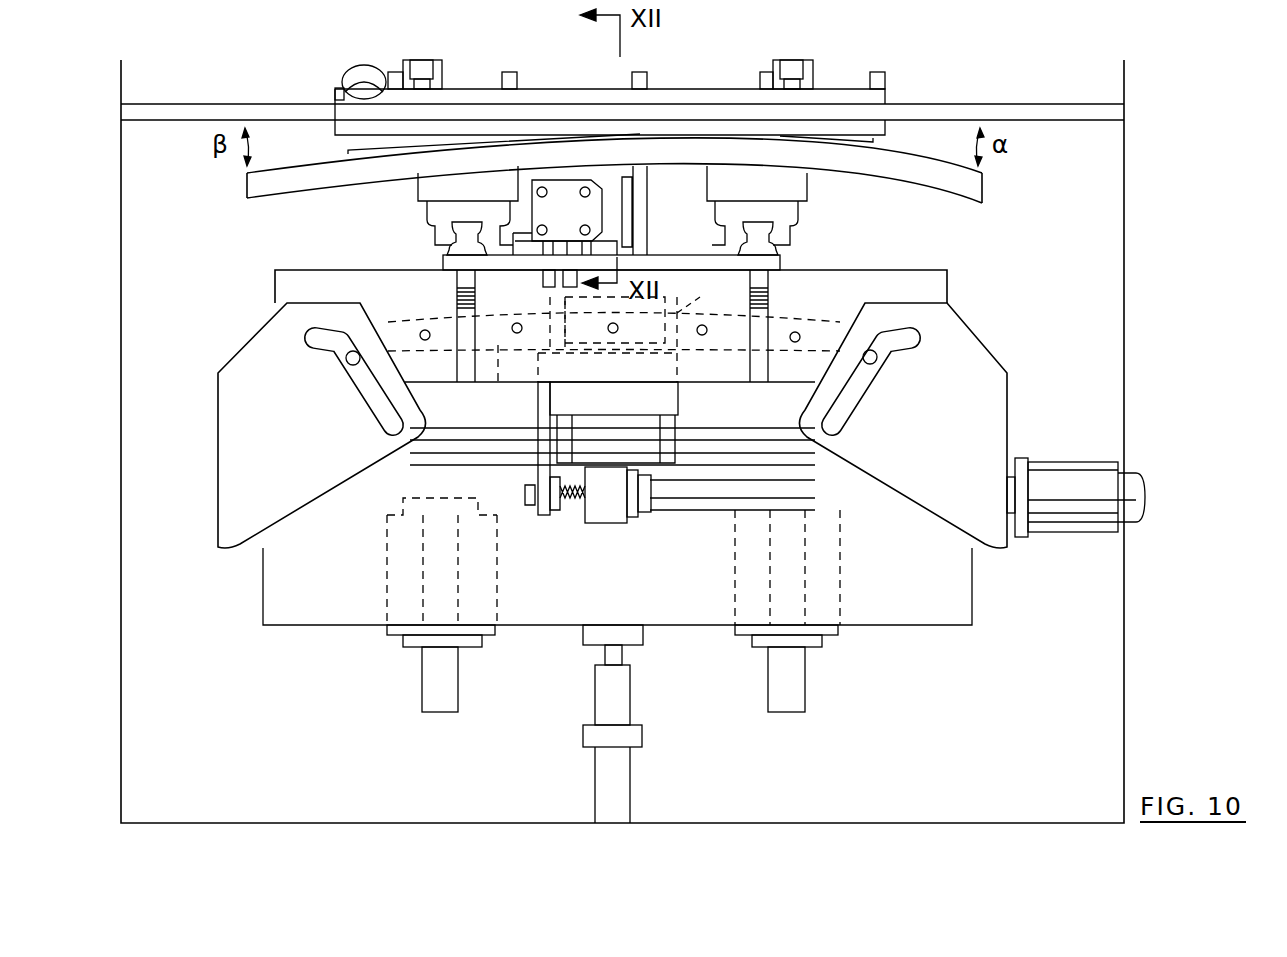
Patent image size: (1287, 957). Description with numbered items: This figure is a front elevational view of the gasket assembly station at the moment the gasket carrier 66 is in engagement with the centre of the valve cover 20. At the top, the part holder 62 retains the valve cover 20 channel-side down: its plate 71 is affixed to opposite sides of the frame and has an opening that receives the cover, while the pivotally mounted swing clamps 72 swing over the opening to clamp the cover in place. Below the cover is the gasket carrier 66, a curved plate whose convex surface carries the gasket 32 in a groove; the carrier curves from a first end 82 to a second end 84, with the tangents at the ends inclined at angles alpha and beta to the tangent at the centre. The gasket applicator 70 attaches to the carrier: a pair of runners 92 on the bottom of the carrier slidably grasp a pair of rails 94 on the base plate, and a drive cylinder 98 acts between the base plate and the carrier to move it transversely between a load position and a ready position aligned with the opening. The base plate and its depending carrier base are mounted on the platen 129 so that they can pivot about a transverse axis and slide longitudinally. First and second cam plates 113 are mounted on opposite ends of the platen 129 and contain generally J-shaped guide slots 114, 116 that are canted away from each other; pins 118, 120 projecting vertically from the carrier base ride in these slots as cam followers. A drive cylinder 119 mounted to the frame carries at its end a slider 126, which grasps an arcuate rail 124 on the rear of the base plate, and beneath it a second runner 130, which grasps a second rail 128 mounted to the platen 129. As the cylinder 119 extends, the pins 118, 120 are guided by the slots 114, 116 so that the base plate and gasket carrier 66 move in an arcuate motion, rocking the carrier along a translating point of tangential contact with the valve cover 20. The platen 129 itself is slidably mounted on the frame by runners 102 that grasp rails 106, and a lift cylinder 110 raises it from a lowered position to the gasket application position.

The valve cover 20 is at (513, 64).
The gasket 32 is at (873, 141).
The part holder 62 is at (940, 88).
The gasket carrier 66 is at (975, 214).
The gasket applicator 70 is at (1000, 335).
The plate 71 is at (244, 104).
The swing clamps 72 is at (428, 60).
The first end 82 is at (982, 192).
The second end 84 is at (247, 186).
The runners 92 is at (427, 212).
The rails 94 is at (450, 250).
The drive cylinder 98 is at (573, 222).
The runners 102 is at (498, 596).
The rails 106 is at (458, 690).
The lift cylinder 110 is at (642, 736).
The cam plates 113 is at (220, 422).
The guide slot 114 is at (848, 418).
The guide slot 116 is at (376, 417).
The pin 118 is at (877, 362).
The drive cylinder 119 is at (1123, 478).
The pin 120 is at (347, 361).
The arcuate rail 124 is at (538, 395).
The slider 126 is at (697, 312).
The second rail 128 is at (722, 428).
The platen 129 is at (305, 625).
The second runner 130 is at (538, 408).